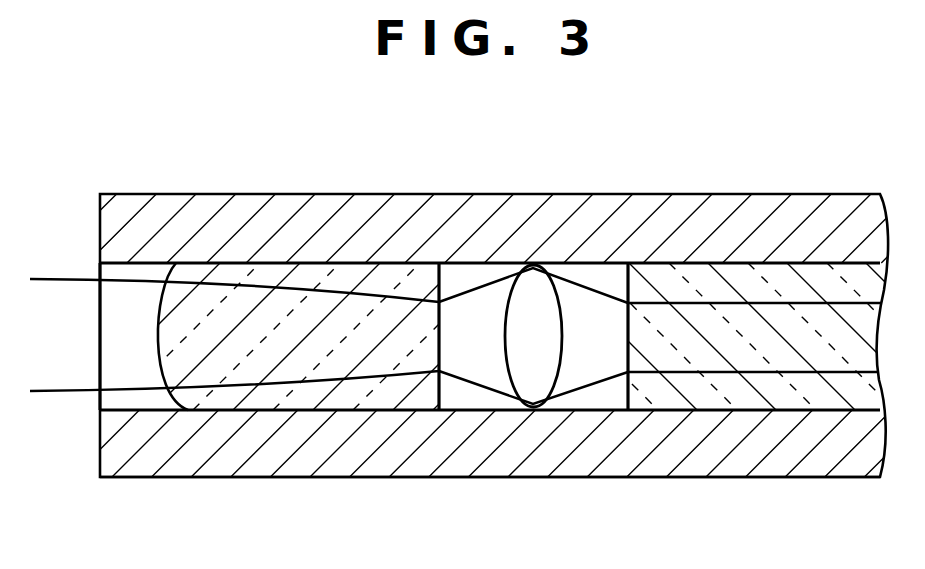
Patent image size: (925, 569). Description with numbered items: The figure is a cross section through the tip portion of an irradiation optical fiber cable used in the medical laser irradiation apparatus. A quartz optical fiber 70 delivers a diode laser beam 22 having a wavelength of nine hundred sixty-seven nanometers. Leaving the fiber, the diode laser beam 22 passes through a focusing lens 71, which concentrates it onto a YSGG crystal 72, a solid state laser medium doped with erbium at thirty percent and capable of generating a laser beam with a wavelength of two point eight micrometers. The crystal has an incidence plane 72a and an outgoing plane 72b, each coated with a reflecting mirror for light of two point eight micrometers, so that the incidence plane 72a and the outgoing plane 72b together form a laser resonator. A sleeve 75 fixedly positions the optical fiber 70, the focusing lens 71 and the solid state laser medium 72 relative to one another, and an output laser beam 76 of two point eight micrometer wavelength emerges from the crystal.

The quartz optical fiber 70 is at (738, 287).
The focusing lens 71 is at (537, 297).
The YSGG crystal 72 is at (340, 275).
The incidence plane 72a is at (442, 392).
The outgoing plane 72b is at (162, 263).
The sleeve 75 is at (268, 453).
The output laser beam 76 is at (62, 322).
The diode laser beam 22 is at (590, 338).